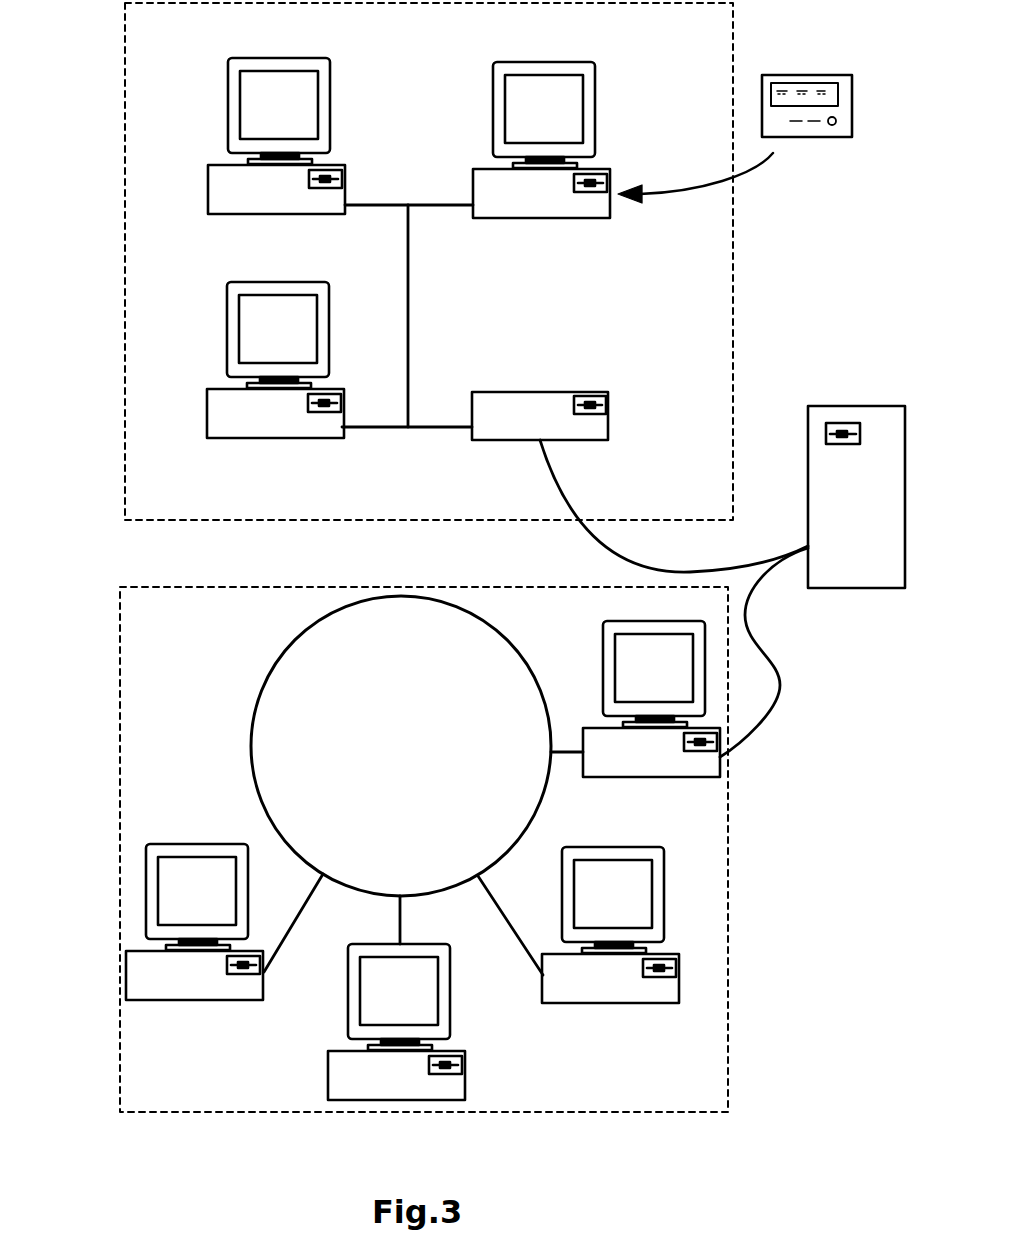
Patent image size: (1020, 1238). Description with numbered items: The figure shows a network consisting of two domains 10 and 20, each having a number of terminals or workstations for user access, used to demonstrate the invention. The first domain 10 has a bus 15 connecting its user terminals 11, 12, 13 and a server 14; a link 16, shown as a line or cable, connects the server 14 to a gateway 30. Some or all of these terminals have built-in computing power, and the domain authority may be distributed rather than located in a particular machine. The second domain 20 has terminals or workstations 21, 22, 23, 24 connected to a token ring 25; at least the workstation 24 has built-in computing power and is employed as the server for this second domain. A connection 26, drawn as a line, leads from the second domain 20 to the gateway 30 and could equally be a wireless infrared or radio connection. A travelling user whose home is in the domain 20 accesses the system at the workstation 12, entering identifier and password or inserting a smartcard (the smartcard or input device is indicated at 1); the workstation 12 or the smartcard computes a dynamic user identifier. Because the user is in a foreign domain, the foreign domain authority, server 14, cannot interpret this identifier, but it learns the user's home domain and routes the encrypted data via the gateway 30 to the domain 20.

The portable data carrier / input device 1 is at (810, 138).
The first domain 10 is at (384, 261).
The user terminal 11 is at (228, 108).
The terminal or workstation 12 is at (493, 107).
The user terminal 13 is at (227, 334).
The server 14 is at (541, 391).
The bus 15 is at (410, 330).
The link 16 is at (568, 498).
The second domain 20 is at (378, 849).
The terminal or workstation 21 is at (188, 1001).
The terminal or workstation 22 is at (466, 1076).
The terminal or workstation 23 is at (620, 1006).
The workstation 24 is at (630, 782).
The token ring 25 is at (521, 663).
The connection 26 is at (780, 700).
The gateway 30 is at (838, 562).